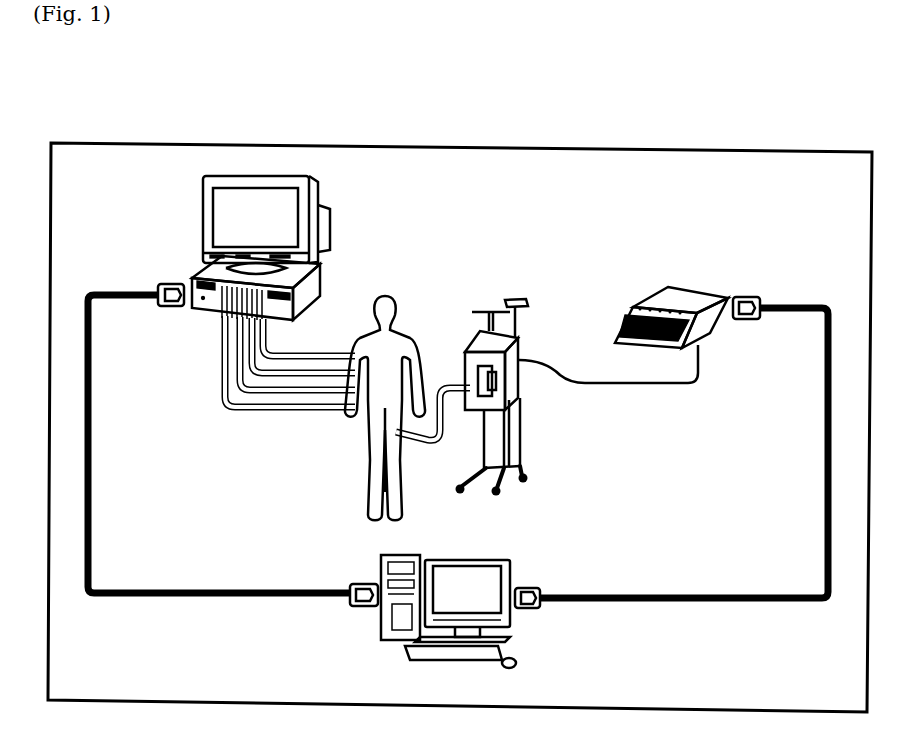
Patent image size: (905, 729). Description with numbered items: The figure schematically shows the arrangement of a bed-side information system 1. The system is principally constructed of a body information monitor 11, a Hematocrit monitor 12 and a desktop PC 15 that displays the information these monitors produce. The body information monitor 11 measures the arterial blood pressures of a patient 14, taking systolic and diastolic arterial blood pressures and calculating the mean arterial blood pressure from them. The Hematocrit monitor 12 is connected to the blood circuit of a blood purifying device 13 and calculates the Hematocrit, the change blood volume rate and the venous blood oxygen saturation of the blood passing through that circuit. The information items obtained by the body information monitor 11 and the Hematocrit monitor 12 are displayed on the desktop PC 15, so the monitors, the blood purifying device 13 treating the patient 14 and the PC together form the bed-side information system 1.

The bed-side information system 1 is at (567, 172).
The body information monitor 11 is at (325, 218).
The Hematocrit monitor 12 is at (690, 298).
The blood purifying device 13 is at (505, 385).
The patient 14 is at (395, 490).
The desktop PC 15 is at (510, 612).